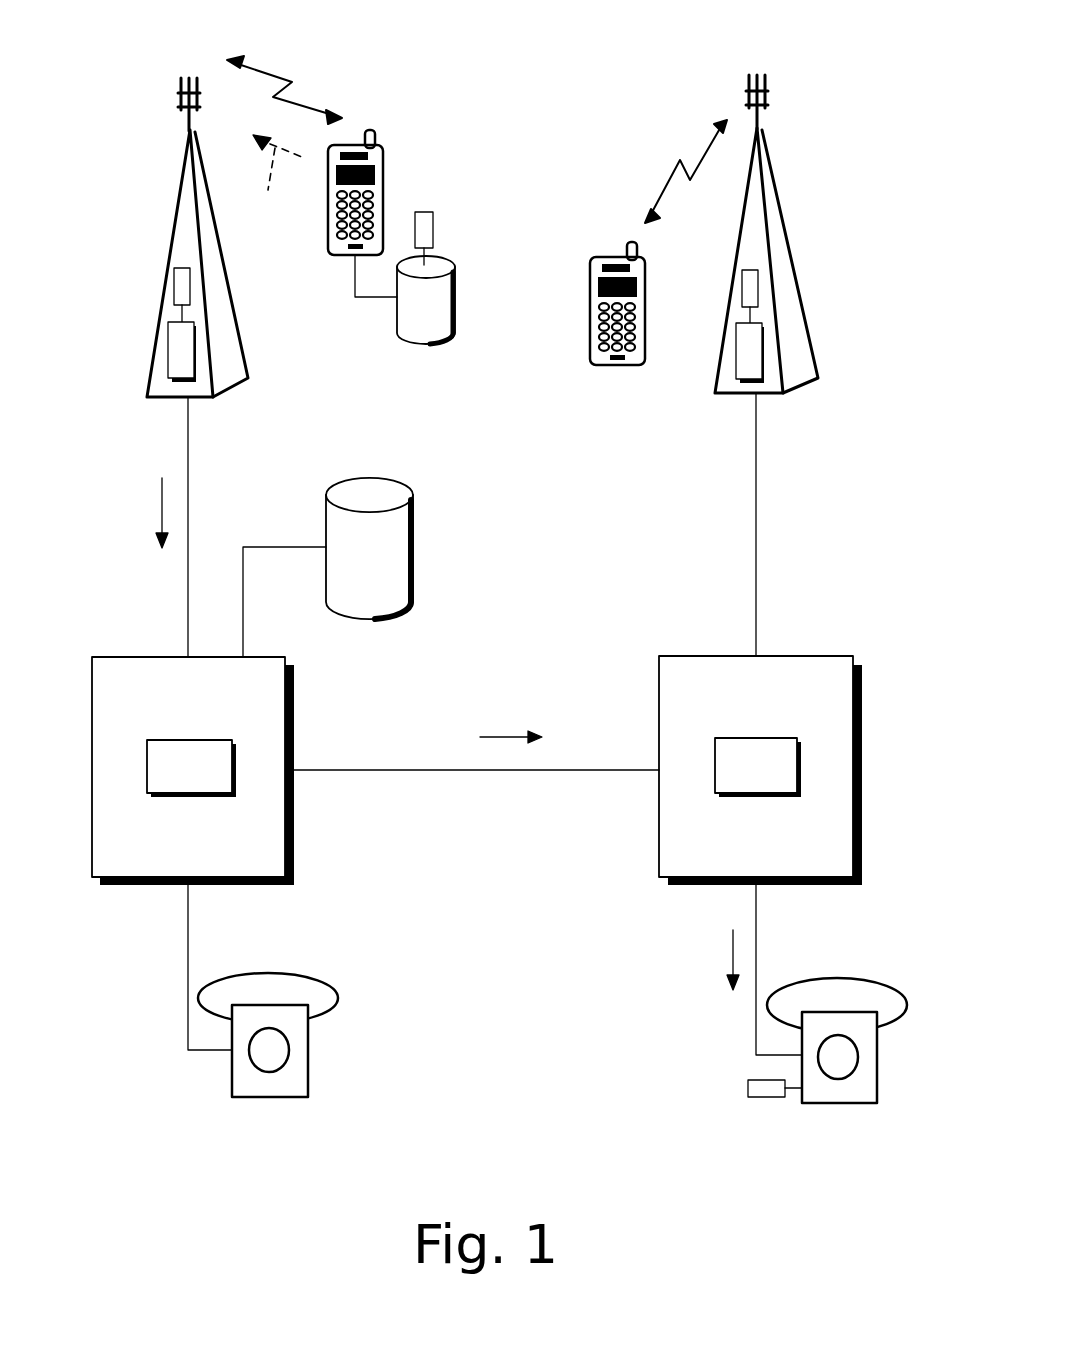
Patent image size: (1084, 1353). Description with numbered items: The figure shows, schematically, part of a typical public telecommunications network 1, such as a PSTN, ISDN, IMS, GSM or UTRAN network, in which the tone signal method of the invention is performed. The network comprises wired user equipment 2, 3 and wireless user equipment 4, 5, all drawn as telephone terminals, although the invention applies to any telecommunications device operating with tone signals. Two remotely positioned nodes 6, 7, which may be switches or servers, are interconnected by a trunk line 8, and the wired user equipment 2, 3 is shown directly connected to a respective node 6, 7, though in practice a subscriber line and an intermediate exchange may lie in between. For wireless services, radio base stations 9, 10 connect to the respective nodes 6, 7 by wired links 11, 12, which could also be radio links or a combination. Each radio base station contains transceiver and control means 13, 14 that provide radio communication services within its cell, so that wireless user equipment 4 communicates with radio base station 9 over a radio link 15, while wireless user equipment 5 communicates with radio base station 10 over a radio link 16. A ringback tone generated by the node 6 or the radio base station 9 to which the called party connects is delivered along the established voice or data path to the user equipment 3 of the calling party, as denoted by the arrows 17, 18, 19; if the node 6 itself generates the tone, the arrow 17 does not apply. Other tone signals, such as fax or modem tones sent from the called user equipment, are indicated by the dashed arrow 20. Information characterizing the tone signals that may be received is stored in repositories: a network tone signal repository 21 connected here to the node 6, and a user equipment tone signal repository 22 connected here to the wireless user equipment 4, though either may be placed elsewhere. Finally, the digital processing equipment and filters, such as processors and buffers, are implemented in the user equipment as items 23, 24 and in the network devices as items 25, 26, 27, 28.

The telecommunications network 1 is at (568, 1028).
The wired user equipment 2 is at (281, 1085).
The wired user equipment 3 is at (848, 1090).
The wireless user equipment 4 is at (380, 153).
The wireless user equipment 5 is at (602, 357).
The node 6 is at (118, 865).
The node 7 is at (828, 672).
The trunk line 8 is at (478, 772).
The radio base station 9 is at (230, 347).
The radio base station 10 is at (800, 350).
The wired link 11 is at (188, 458).
The wired link 12 is at (756, 492).
The transceiver and control means 13 is at (177, 347).
The transceiver and control means 14 is at (748, 358).
The radio link 15 is at (262, 68).
The radio link 16 is at (665, 183).
The arrow 17 is at (162, 507).
The arrow 18 is at (500, 737).
The arrow 19 is at (730, 958).
The dashed arrow 20 is at (275, 180).
The network tone signal repository 21 is at (398, 537).
The user equipment tone signal repository 22 is at (410, 325).
The digital processing equipment and filters 23 is at (425, 218).
The digital processing equipment and filters 24 is at (767, 1088).
The digital processing equipment and filters 25 is at (182, 283).
The digital processing equipment and filters 26 is at (753, 287).
The digital processing equipment and filters 27 is at (222, 777).
The digital processing equipment and filters 28 is at (727, 773).